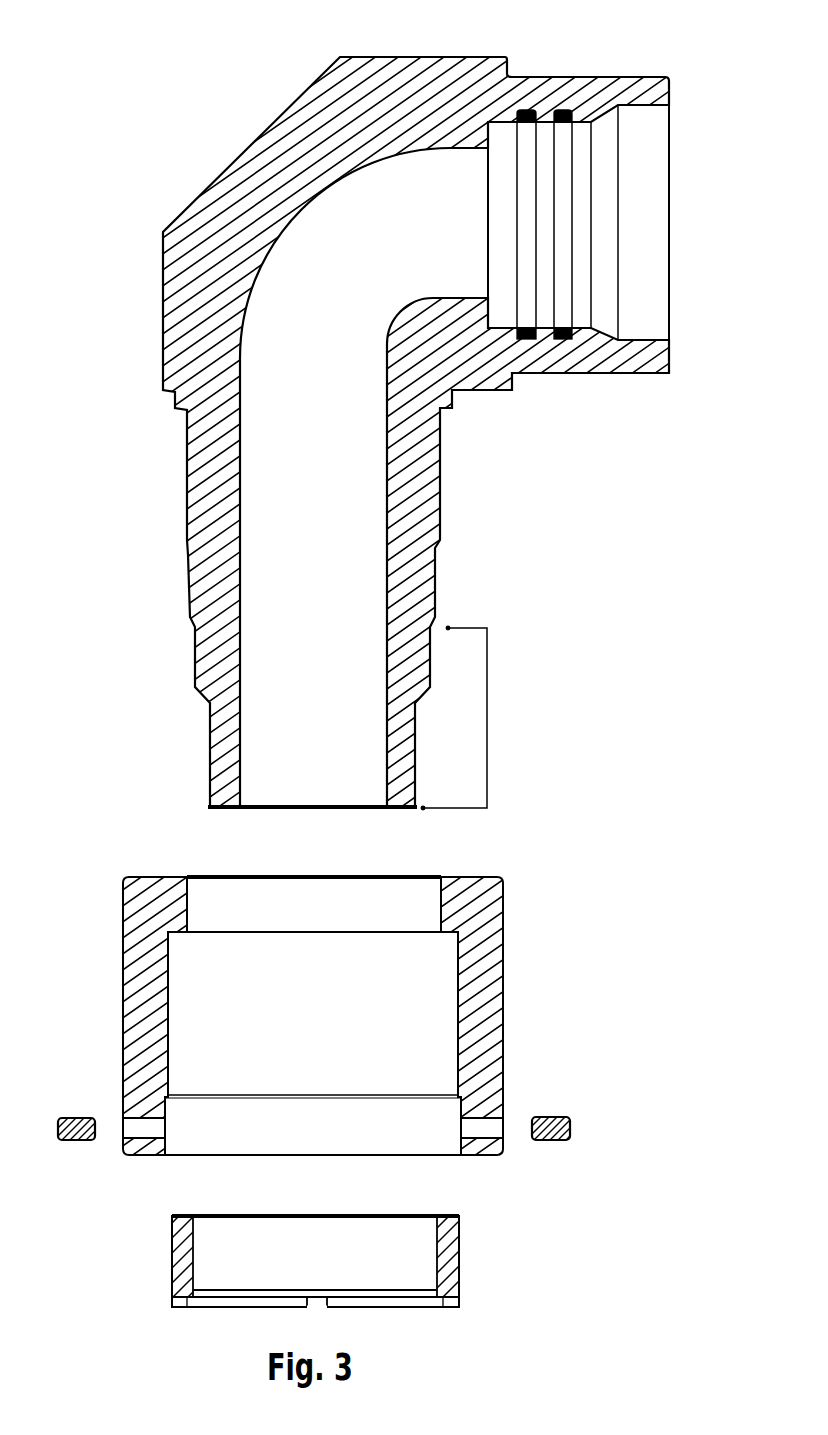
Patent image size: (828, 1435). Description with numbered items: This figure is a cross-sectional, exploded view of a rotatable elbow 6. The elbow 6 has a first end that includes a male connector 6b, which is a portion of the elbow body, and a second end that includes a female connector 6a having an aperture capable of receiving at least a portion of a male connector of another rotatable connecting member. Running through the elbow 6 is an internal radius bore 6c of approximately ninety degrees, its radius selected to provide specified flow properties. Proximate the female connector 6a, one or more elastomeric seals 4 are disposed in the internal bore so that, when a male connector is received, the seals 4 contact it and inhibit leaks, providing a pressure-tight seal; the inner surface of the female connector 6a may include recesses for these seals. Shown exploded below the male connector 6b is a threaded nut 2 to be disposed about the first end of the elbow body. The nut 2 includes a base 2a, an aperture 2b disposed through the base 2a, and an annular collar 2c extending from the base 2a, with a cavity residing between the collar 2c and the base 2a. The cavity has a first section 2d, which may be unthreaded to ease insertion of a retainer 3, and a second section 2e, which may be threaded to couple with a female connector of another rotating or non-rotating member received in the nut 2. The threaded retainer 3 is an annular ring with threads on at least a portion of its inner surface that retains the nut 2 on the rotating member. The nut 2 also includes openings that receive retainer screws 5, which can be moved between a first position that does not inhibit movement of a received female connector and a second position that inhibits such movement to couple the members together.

The threaded nut 2 is at (480, 908).
The base 2a is at (152, 895).
The aperture 2b is at (398, 877).
The annular collar 2c is at (485, 1018).
The first section 2d is at (314, 914).
The second section 2e is at (313, 987).
The threaded retainer 3 is at (445, 1252).
The elastomeric seals 4 is at (530, 110).
The retainer screws 5 is at (68, 1120).
The elbow 6 is at (275, 153).
The female connector 6a is at (578, 212).
The male connector 6b is at (487, 718).
The internal radius bore 6c is at (345, 354).